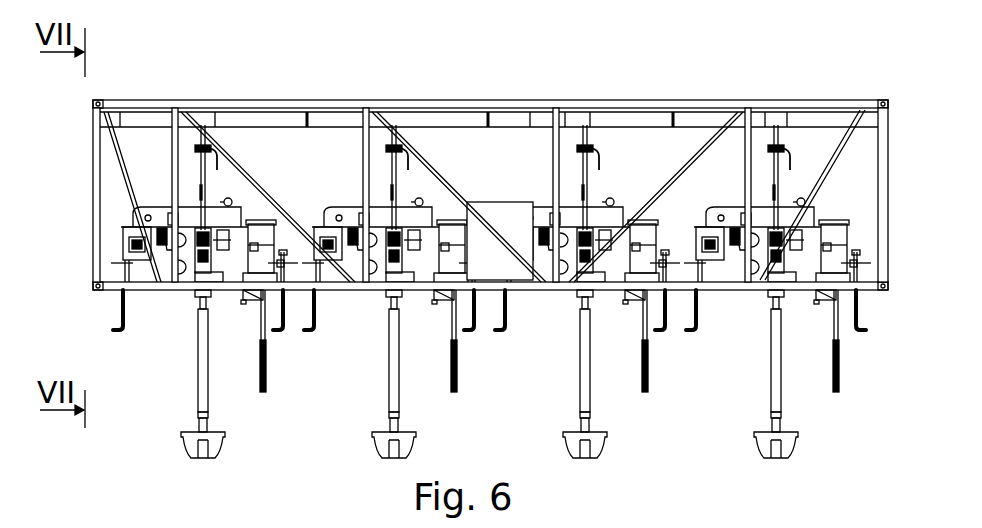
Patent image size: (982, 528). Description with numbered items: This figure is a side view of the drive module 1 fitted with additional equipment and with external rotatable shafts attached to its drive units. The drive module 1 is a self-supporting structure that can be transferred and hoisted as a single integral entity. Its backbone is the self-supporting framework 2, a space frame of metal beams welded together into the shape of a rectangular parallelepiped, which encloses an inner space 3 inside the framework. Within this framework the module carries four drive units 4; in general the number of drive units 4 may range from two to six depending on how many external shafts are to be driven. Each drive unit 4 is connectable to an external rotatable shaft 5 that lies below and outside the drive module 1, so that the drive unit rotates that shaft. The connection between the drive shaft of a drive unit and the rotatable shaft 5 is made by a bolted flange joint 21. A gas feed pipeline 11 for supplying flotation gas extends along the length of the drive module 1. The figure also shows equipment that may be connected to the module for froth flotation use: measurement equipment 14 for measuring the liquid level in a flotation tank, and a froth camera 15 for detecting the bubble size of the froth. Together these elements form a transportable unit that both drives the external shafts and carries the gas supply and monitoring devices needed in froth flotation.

The drive module 1 is at (495, 64).
The self-supporting framework 2 is at (367, 105).
The inner space 3 is at (471, 176).
The drive unit 4 is at (170, 205).
The external rotatable shaft 5 is at (200, 362).
The gas feed pipeline 11 is at (205, 182).
The measurement equipment 14 is at (264, 360).
The froth camera 15 is at (259, 297).
The bolted flange joint 21 is at (197, 292).